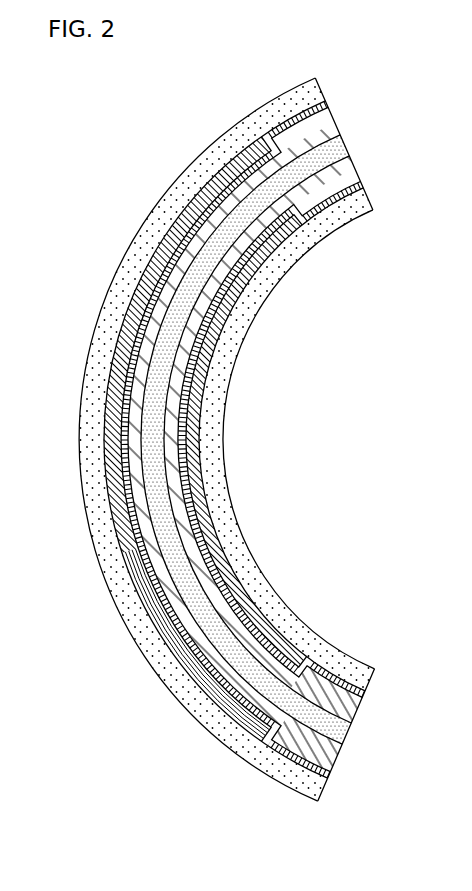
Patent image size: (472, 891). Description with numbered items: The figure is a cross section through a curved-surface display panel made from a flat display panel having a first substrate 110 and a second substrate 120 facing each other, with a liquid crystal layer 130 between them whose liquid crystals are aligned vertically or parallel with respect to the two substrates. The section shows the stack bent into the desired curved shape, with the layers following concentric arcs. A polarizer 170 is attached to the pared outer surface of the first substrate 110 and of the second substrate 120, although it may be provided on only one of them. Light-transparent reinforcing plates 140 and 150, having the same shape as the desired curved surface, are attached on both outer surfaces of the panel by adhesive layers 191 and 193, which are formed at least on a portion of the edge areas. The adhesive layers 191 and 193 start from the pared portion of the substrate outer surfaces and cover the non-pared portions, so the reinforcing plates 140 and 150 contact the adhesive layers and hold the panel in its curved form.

The first substrate 110 is at (350, 712).
The second substrate 120 is at (330, 763).
The liquid crystal layer 130 is at (337, 737).
The reinforcing plate 140 is at (367, 682).
The reinforcing plate 150 is at (323, 791).
The polarizer 170 is at (220, 570).
The adhesive layer 191 is at (195, 407).
The adhesive layer 193 is at (137, 277).